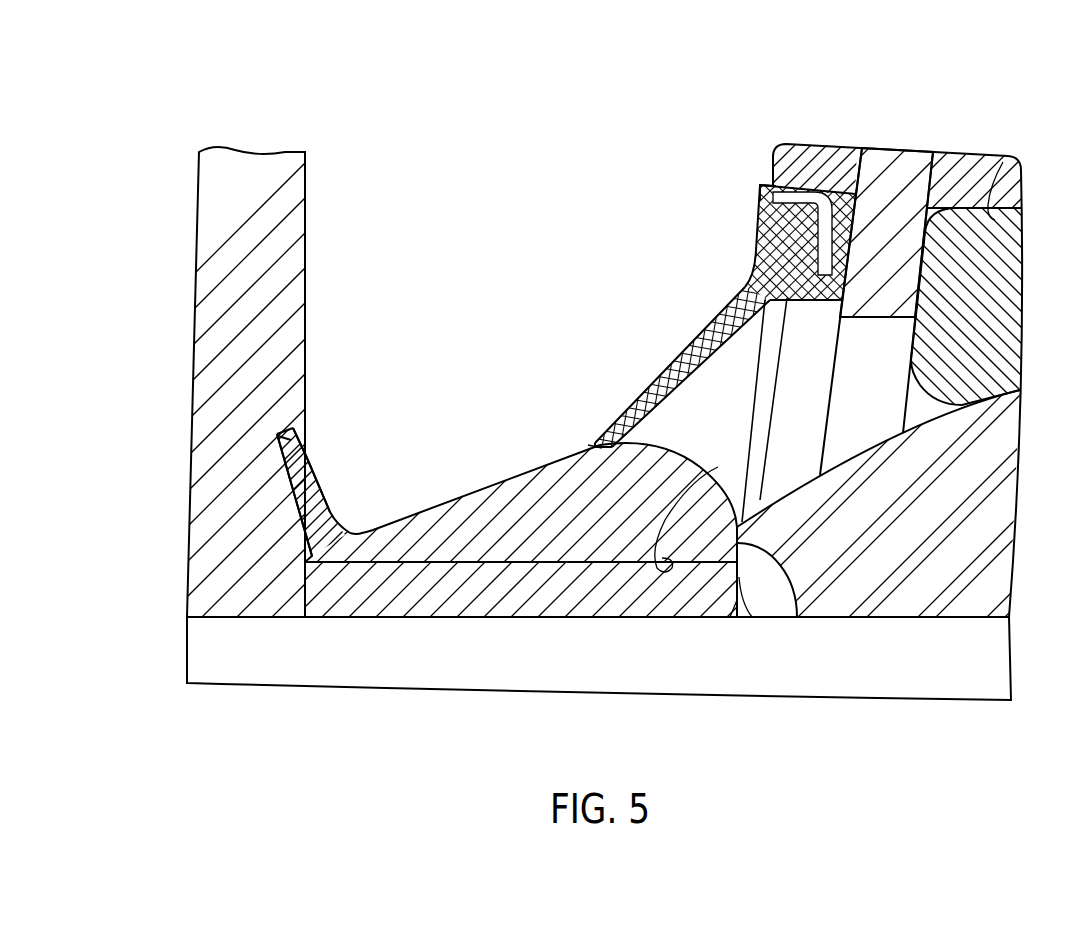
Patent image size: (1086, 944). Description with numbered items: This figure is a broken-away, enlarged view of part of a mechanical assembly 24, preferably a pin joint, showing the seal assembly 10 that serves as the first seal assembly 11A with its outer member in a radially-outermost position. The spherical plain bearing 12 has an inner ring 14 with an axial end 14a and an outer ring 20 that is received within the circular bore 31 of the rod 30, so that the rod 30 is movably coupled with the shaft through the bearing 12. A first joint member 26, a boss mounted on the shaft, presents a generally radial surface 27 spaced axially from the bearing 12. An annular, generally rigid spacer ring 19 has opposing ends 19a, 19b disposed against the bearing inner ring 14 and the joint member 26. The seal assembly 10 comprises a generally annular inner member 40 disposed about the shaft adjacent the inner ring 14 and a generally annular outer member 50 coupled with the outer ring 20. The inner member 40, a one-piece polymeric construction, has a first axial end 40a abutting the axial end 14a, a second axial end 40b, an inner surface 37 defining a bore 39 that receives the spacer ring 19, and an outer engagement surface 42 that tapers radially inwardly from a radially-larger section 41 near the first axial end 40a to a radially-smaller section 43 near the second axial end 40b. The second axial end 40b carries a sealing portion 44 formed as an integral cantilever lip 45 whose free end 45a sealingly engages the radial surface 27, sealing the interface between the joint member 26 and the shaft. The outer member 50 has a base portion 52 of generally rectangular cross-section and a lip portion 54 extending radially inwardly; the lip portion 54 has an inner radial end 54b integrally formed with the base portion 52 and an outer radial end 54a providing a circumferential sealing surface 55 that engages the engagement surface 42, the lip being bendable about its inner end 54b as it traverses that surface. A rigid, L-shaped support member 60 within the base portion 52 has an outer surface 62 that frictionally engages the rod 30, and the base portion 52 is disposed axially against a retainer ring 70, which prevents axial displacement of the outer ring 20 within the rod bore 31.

The seal assembly 10 is at (504, 391).
The first seal assembly 11A is at (579, 356).
The spherical plain bearing 12 is at (793, 388).
The inner ring 14 is at (599, 667).
The axial end of inner ring 14a is at (730, 612).
The spacer ring 19 is at (660, 619).
The spacer ring end 19a is at (742, 612).
The spacer ring end 19b is at (305, 610).
The outer ring 20 is at (1000, 282).
The mechanical assembly 24 is at (406, 158).
The first joint member 26 is at (374, 359).
The radial surface 27 is at (307, 274).
The rod 30 is at (872, 332).
The rod bore 31 is at (1003, 162).
The inner surface 37 is at (438, 565).
The bore 39 is at (735, 523).
The seal inner member 40 is at (504, 522).
The first axial end 40a is at (788, 596).
The second axial end 40b is at (309, 550).
The radially-larger section 41 is at (638, 461).
The outer engagement surface 42 is at (490, 488).
The radially-smaller section 43 is at (370, 528).
The sealing portion 44 is at (318, 463).
The cantilever lip 45 is at (226, 462).
The free end 45a is at (283, 438).
The seal outer member 50 is at (719, 276).
The base portion 52 is at (747, 184).
The lip portion 54 is at (676, 367).
The outer radial end 54a is at (607, 438).
The inner radial end 54b is at (766, 272).
The circumferential sealing surface 55 is at (597, 442).
The support member 60 is at (789, 192).
The outer surface 62 is at (826, 190).
The retainer ring 70 is at (912, 162).